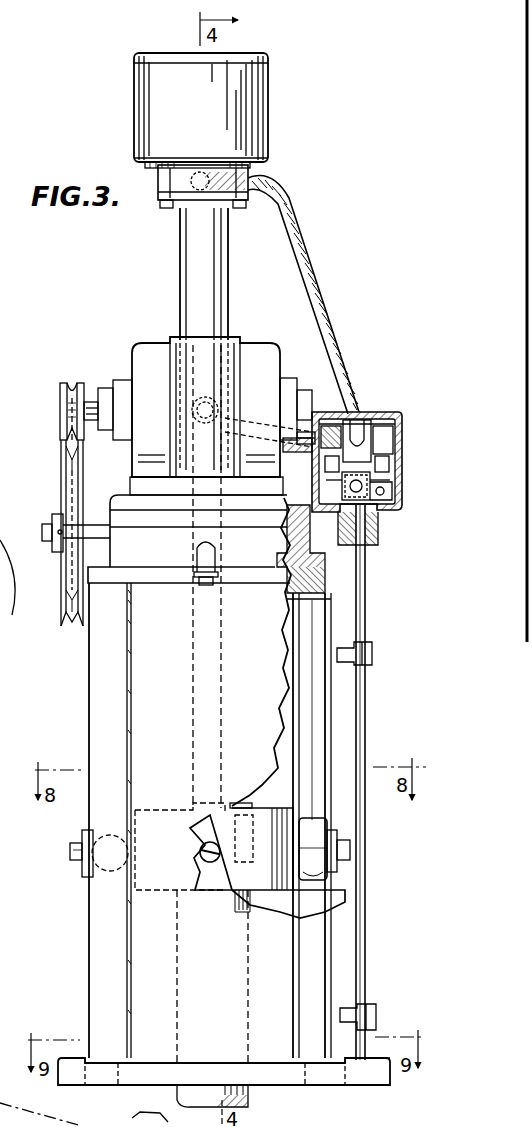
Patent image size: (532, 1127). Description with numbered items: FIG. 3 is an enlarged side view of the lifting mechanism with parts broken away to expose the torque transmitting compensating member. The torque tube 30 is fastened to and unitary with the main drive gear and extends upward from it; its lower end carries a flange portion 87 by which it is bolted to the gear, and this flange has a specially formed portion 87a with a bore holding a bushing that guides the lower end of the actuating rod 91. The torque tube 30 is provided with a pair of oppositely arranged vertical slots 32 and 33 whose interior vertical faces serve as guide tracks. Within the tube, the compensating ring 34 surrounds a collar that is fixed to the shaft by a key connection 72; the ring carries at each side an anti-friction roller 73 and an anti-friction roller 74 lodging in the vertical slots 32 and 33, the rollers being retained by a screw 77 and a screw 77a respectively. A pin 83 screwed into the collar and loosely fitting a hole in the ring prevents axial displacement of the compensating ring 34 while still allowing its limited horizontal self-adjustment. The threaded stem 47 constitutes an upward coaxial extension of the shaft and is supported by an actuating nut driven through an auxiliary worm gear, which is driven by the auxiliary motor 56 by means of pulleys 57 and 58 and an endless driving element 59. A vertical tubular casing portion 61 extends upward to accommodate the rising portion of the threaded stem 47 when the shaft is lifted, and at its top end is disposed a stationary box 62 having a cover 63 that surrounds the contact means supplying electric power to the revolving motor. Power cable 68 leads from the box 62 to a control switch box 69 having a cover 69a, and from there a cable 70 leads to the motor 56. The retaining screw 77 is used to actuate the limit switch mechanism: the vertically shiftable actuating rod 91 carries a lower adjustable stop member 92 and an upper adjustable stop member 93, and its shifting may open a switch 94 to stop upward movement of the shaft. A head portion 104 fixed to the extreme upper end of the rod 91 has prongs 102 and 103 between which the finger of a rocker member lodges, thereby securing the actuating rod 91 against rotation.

The torque tube 30 is at (152, 733).
The vertical slot 32 is at (313, 768).
The vertical slot 33 is at (108, 705).
The compensating ring 34 is at (288, 810).
The threaded stem 47 is at (193, 655).
The auxiliary motor 56 is at (160, 346).
The pulley 57 is at (62, 398).
The pulley 58 is at (65, 492).
The endless driving element 59 is at (80, 400).
The vertical tubular casing portion 61 is at (180, 248).
The stationary box 62 is at (132, 118).
The cover 63 is at (177, 52).
The power cable 68 is at (323, 276).
The control switch box 69 is at (398, 452).
The cover 69a is at (354, 414).
The cable 70 is at (298, 446).
The key connection 72 is at (242, 812).
The anti-friction roller 73 is at (312, 820).
The anti-friction roller 74 is at (104, 874).
The screw 77 is at (350, 856).
The screw 77a is at (68, 852).
The pin 83 is at (212, 864).
The flange portion 87 is at (190, 1062).
The specially formed portion 87a is at (388, 1070).
The actuating rod 91 is at (366, 745).
The lower adjustable stop member 92 is at (374, 1010).
The upper adjustable stop member 93 is at (370, 660).
The switch 94 is at (380, 426).
The prong 102 is at (388, 492).
The prong 103 is at (374, 522).
The head portion 104 is at (346, 498).